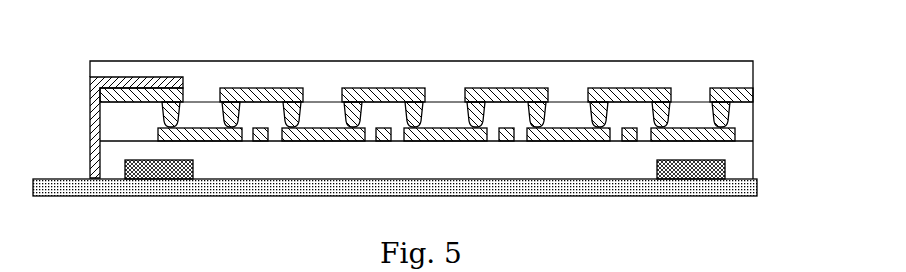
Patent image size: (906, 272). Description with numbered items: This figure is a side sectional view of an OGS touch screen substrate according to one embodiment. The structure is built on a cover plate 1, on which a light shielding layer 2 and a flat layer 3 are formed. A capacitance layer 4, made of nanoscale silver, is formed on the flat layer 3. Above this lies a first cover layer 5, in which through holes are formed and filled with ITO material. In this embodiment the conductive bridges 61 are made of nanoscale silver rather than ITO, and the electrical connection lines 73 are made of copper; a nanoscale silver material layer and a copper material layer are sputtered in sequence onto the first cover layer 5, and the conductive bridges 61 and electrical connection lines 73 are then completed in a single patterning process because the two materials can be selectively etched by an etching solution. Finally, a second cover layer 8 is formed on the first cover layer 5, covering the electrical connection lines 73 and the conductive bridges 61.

The cover plate 1 is at (62, 183).
The light shielding layer 2 is at (723, 168).
The flat layer 3 is at (742, 152).
The capacitance layer 4 is at (683, 135).
The first cover layer 5 is at (742, 117).
The conductive bridges 61 is at (633, 89).
The second cover layer 8 is at (740, 83).
The electrical connection lines 73 is at (97, 130).